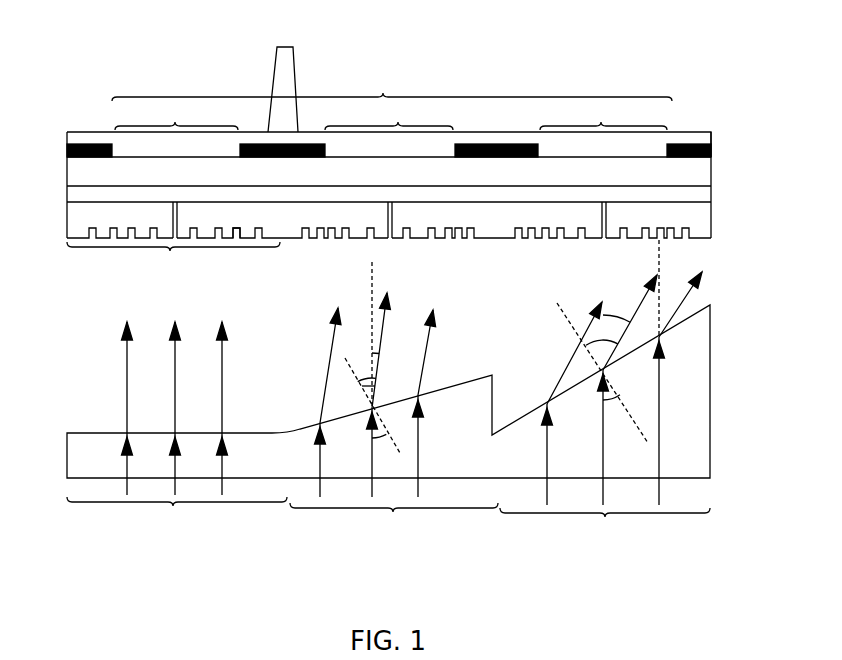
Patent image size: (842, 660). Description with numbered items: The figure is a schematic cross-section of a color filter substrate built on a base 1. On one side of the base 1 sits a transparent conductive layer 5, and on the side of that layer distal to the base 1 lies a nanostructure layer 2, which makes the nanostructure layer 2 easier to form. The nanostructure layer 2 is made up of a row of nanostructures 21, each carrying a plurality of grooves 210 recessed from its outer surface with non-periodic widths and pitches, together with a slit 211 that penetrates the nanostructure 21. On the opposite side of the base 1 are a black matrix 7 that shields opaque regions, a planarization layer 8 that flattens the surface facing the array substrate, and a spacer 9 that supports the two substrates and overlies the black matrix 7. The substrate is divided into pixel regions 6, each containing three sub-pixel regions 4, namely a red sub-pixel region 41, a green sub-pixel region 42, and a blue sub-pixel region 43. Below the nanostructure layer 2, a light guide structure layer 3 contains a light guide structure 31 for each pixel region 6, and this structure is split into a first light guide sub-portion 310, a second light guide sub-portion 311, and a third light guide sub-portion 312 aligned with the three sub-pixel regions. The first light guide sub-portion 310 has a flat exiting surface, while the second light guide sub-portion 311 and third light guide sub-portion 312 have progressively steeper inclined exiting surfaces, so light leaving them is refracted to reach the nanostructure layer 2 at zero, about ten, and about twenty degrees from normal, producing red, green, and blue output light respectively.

The base 1 is at (78, 173).
The nanostructure layer 2 is at (73, 225).
The light guide structure layer 3 is at (693, 440).
The sub-pixel region 4 is at (596, 108).
The transparent conductive layer 5 is at (75, 195).
The pixel region 6 is at (392, 84).
The black matrix 7 is at (72, 145).
The planarization layer 8 is at (693, 140).
The spacer 9 is at (290, 50).
The nanostructure 21 is at (173, 257).
The red sub-pixel region 41 is at (176, 116).
The green sub-pixel region 42 is at (389, 115).
The blue sub-pixel region 43 is at (603, 115).
The groove 210 is at (233, 239).
The slit 211 is at (172, 212).
The light guide structure 31 is at (607, 545).
The first light guide sub-portion 310 is at (177, 426).
The second light guide sub-portion 311 is at (394, 400).
The third light guide sub-portion 312 is at (605, 391).